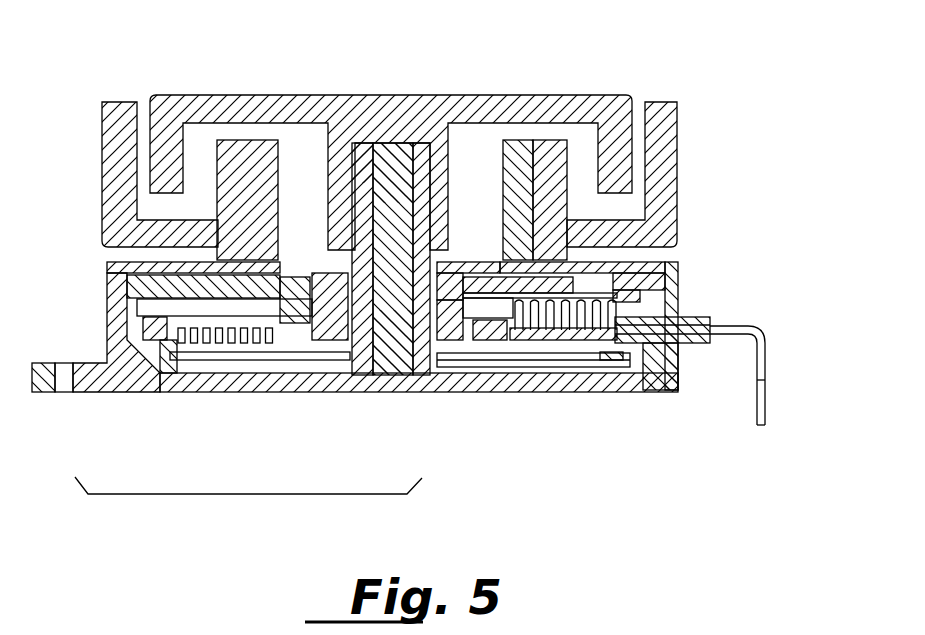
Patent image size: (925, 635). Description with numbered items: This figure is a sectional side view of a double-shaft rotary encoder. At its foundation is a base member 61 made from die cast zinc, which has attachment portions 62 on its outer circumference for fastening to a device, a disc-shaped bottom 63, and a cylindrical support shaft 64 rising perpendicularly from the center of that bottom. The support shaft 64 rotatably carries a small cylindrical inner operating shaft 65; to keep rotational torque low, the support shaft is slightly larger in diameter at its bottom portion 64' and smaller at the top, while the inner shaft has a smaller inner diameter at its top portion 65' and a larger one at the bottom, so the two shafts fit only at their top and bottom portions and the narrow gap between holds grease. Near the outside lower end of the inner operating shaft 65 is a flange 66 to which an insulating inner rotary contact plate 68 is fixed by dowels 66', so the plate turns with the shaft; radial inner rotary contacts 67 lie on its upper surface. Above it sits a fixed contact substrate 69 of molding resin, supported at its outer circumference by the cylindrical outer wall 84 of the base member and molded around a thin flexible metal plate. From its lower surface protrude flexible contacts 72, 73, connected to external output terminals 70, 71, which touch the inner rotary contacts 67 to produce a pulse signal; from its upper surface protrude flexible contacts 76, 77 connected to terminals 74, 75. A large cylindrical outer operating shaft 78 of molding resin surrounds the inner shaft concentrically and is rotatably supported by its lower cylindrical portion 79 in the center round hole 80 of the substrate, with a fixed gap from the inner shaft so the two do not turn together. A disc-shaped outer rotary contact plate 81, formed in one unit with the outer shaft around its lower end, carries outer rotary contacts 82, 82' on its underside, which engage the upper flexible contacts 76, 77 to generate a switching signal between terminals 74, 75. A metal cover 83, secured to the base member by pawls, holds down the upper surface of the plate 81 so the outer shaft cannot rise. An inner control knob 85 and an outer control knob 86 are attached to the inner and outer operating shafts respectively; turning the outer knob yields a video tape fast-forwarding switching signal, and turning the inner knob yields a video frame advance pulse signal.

The base member 61 is at (248, 505).
The attachment portions 62 is at (95, 392).
The disc-shaped bottom 63 is at (338, 392).
The cylindrical support shaft 64 is at (434, 259).
The bottom portion of cylindrical support shaft 64' is at (394, 388).
The small cylindrical inner operating shaft 65 is at (337, 259).
The top portion of inner operating shaft 65' is at (346, 107).
The flange 66 is at (533, 361).
The dowels 66' is at (477, 390).
The radial inner rotary contacts 67 is at (242, 373).
The inner rotary contact plate 68 is at (305, 365).
The fixed contact substrate 69 is at (657, 392).
The external output terminal 70 is at (767, 377).
The external output terminal 71 is at (767, 377).
The lower surface flexible contact 72 is at (272, 375).
The lower surface flexible contact 73 is at (223, 345).
The external output terminal 74 is at (767, 377).
The external output terminal 75 is at (767, 377).
The upper surface flexible contact 76 is at (540, 345).
The upper surface flexible contact 77 is at (606, 345).
The large cylindrical outer operating shaft 78 is at (520, 160).
The lower cylindrical portion 79 is at (452, 290).
The center round hole 80 is at (460, 285).
The outer rotary contact plate 81 is at (640, 287).
The outer rotary contact 82 is at (658, 255).
The outer rotary contact 82' is at (662, 330).
The metal cover 83 is at (112, 265).
The cylindrical outer wall 84 is at (125, 392).
The inner control knob 85 is at (217, 108).
The outer control knob 86 is at (108, 140).